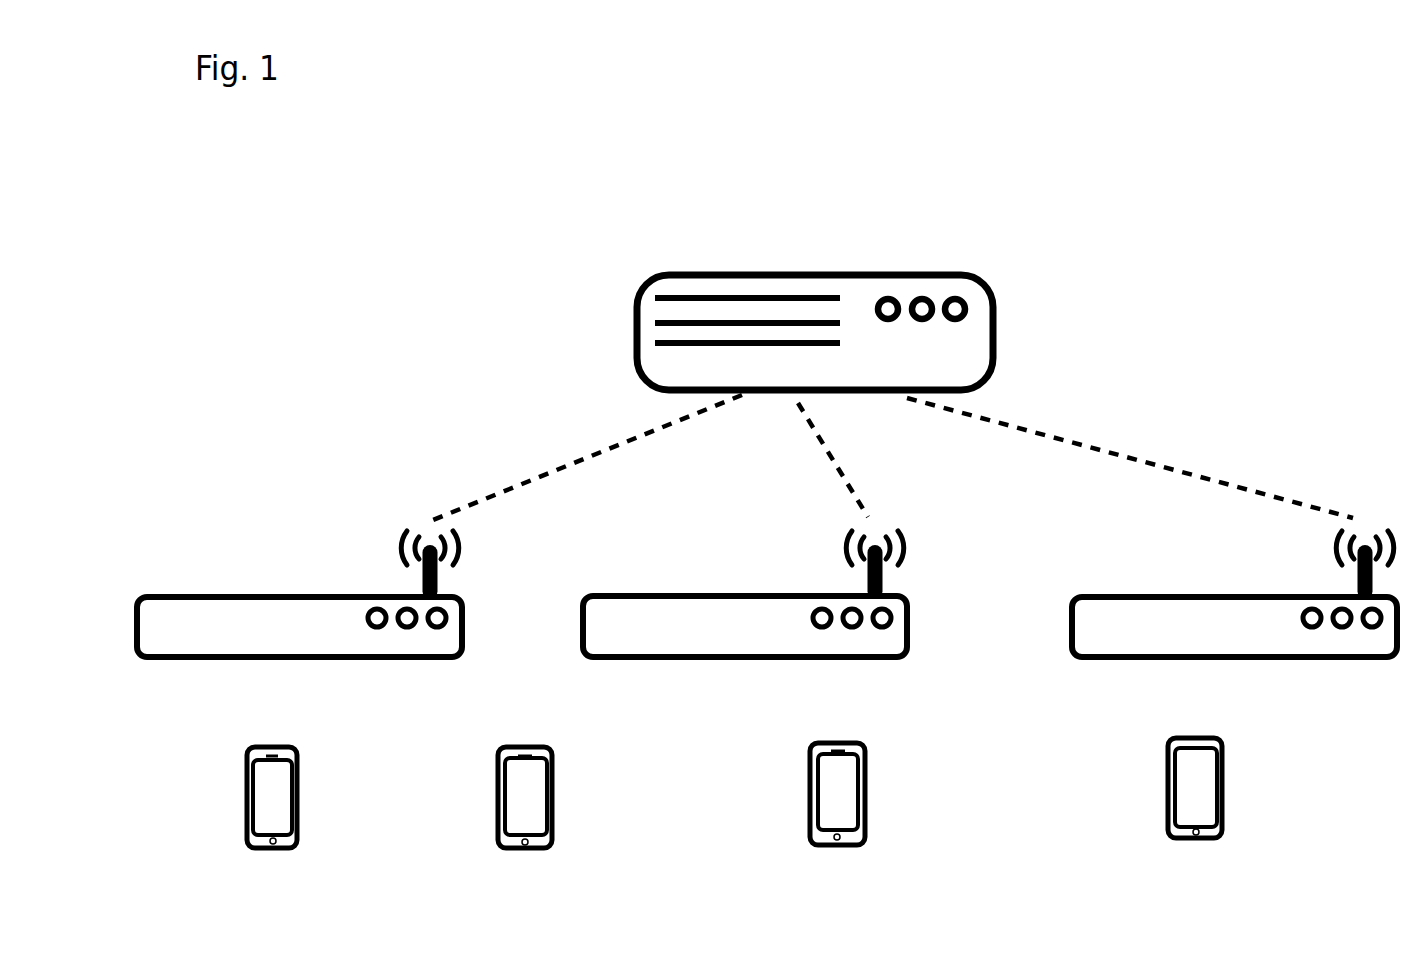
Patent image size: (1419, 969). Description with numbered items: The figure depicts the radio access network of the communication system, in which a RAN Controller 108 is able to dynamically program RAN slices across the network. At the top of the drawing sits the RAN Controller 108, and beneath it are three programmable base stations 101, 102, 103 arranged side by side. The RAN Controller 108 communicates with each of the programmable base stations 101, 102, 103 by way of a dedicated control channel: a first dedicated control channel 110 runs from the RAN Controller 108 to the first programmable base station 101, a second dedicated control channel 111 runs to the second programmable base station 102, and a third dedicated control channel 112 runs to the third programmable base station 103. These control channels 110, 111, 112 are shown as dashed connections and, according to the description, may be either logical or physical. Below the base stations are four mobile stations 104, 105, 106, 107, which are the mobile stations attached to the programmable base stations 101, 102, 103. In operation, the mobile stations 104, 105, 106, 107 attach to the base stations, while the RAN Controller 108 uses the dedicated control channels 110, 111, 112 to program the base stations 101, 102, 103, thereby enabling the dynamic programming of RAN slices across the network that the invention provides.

The programmable base station 101 is at (218, 590).
The programmable base station 102 is at (638, 590).
The programmable base station 103 is at (1165, 590).
The mobile station 104 is at (308, 802).
The mobile station 105 is at (560, 803).
The mobile station 106 is at (872, 793).
The mobile station 107 is at (1229, 795).
The RAN Controller 108 is at (820, 270).
The dedicated control channel 110 is at (577, 458).
The dedicated control channel 111 is at (862, 490).
The dedicated control channel 112 is at (1115, 448).